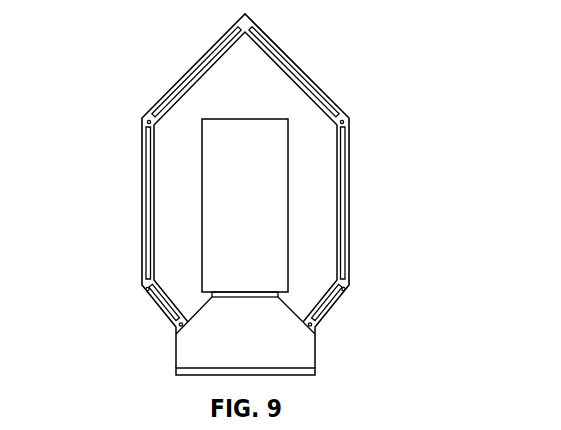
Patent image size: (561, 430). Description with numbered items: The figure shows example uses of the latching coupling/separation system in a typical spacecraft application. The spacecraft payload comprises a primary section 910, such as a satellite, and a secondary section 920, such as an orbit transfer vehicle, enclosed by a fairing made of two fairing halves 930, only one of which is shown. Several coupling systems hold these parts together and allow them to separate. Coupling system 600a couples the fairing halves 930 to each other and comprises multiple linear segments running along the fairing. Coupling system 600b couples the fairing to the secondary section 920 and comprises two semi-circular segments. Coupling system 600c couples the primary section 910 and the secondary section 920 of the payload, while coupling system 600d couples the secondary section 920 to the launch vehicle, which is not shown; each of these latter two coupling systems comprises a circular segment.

The primary section 910 is at (233, 115).
The secondary section 920 is at (176, 336).
The fairing halves 930 is at (348, 120).
The coupling system 600a is at (345, 167).
The coupling system 600b is at (309, 327).
The coupling system 600c is at (279, 296).
The coupling system 600d is at (315, 372).